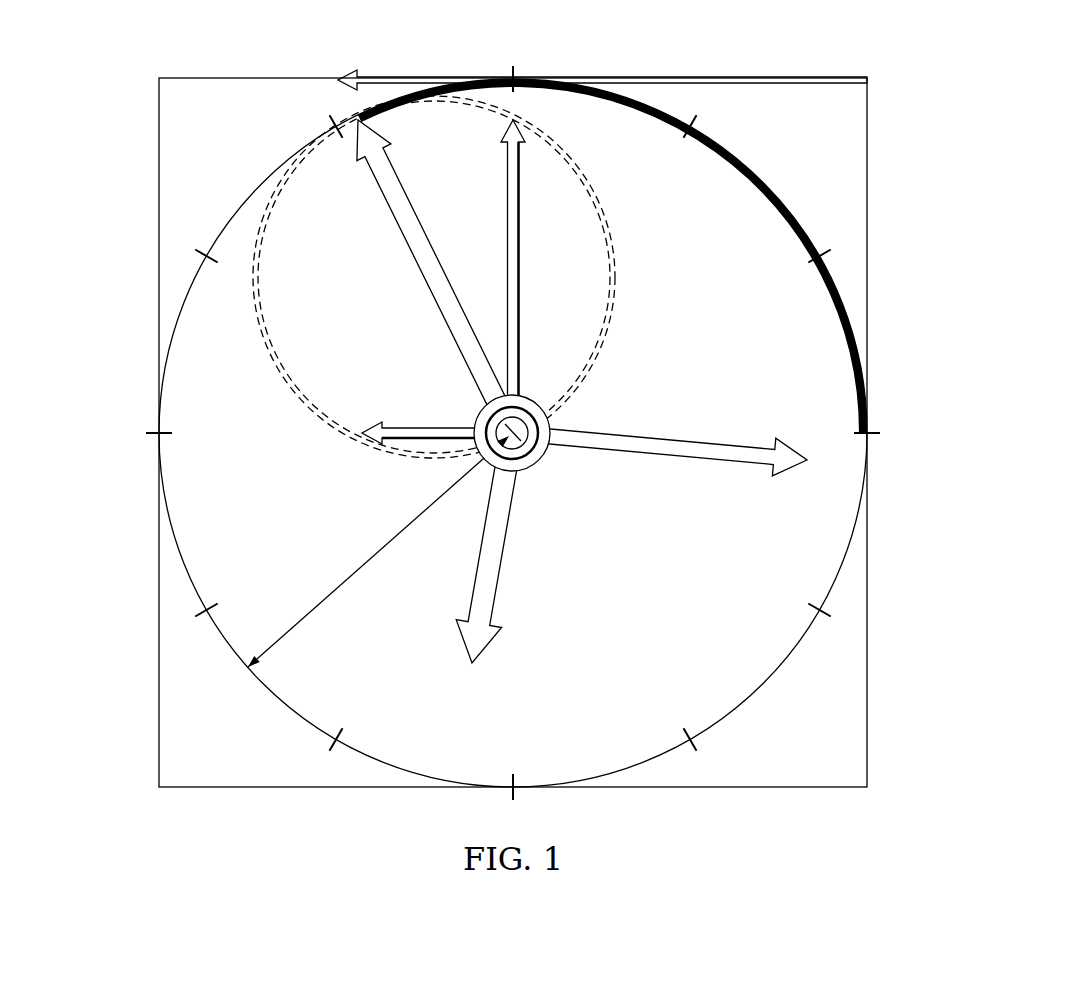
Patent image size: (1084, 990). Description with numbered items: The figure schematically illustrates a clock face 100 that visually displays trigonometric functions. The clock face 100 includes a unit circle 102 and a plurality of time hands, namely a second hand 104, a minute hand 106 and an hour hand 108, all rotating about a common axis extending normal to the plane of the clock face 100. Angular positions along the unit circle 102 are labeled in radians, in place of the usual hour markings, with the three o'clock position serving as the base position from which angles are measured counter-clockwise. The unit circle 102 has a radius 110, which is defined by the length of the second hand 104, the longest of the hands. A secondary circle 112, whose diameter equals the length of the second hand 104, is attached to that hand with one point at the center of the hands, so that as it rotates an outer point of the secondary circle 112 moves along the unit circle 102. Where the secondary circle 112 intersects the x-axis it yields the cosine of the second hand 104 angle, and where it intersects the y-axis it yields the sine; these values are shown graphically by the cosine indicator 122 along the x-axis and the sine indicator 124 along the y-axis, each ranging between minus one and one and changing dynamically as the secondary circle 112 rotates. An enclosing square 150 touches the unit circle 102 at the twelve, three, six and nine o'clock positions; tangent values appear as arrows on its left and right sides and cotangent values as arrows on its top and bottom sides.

The clock face 100 is at (274, 52).
The unit circle 102 is at (178, 540).
The second hand 104 is at (429, 272).
The minute hand 106 is at (666, 438).
The hour hand 108 is at (505, 549).
The radius 110 is at (384, 546).
The secondary circle 112 is at (616, 272).
The cosine indicator 122 is at (430, 426).
The sine indicator 124 is at (520, 300).
The enclosing square 150 is at (158, 152).